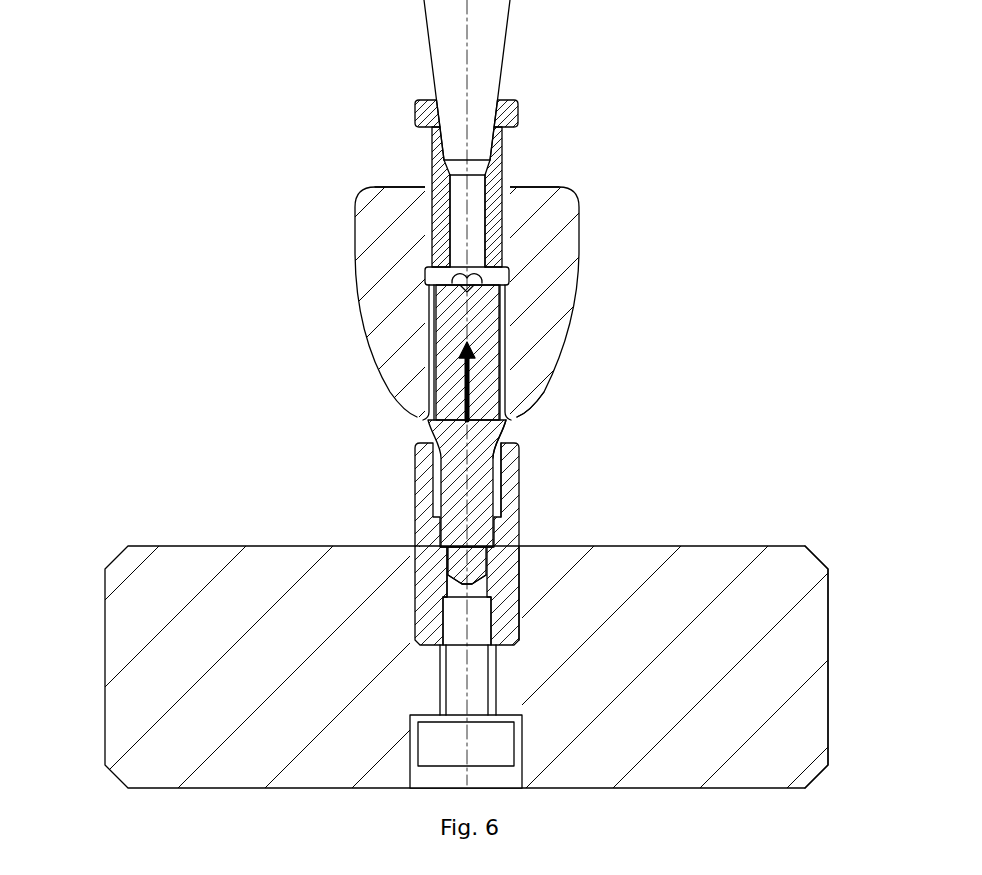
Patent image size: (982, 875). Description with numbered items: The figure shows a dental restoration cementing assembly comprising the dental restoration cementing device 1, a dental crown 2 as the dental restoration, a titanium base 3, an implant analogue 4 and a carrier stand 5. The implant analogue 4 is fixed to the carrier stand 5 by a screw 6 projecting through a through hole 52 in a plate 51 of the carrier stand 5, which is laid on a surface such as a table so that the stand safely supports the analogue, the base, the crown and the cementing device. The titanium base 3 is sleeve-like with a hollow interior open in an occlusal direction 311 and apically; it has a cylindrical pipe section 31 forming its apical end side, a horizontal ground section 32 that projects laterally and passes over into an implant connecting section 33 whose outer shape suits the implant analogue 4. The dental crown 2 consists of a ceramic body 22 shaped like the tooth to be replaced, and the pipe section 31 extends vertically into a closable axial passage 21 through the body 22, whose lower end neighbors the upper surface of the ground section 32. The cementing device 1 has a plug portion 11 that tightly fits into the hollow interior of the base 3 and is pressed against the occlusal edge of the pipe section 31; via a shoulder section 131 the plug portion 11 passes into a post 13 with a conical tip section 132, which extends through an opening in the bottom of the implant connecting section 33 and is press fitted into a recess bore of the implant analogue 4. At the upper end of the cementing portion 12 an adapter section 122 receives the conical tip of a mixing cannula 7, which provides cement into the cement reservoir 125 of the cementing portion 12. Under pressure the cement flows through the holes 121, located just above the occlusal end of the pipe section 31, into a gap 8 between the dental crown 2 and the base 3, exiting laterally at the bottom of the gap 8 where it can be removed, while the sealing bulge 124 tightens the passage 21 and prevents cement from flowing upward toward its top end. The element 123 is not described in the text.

The dental restoration cementing device 1 is at (476, 392).
The mixing cannula 7 is at (490, 62).
The cementing portion 12 is at (512, 163).
The adapter section 122 is at (413, 110).
The right flange 123 is at (518, 115).
The cement reservoir 125 is at (458, 222).
The sealing bulge 124 is at (500, 253).
The holes 121 is at (455, 275).
The dental crown 2 is at (360, 345).
The ceramic body 22 is at (560, 212).
The closable axial passage 21 is at (510, 275).
The gap 8 is at (437, 328).
The cylindrical pipe section 31 is at (503, 360).
The occlusal direction 311 is at (432, 396).
The horizontal ground section 32 is at (518, 413).
The titanium base 3 is at (413, 429).
The plug portion 11 is at (507, 428).
The implant analogue 4 is at (413, 500).
The implant connecting section 33 is at (498, 470).
The post 13 is at (445, 565).
The shoulder section 131 is at (517, 545).
The conical tip section 132 is at (482, 580).
The carrier stand 5 is at (107, 557).
The plate 51 is at (815, 632).
The through hole 52 is at (513, 775).
The screw 6 is at (457, 693).